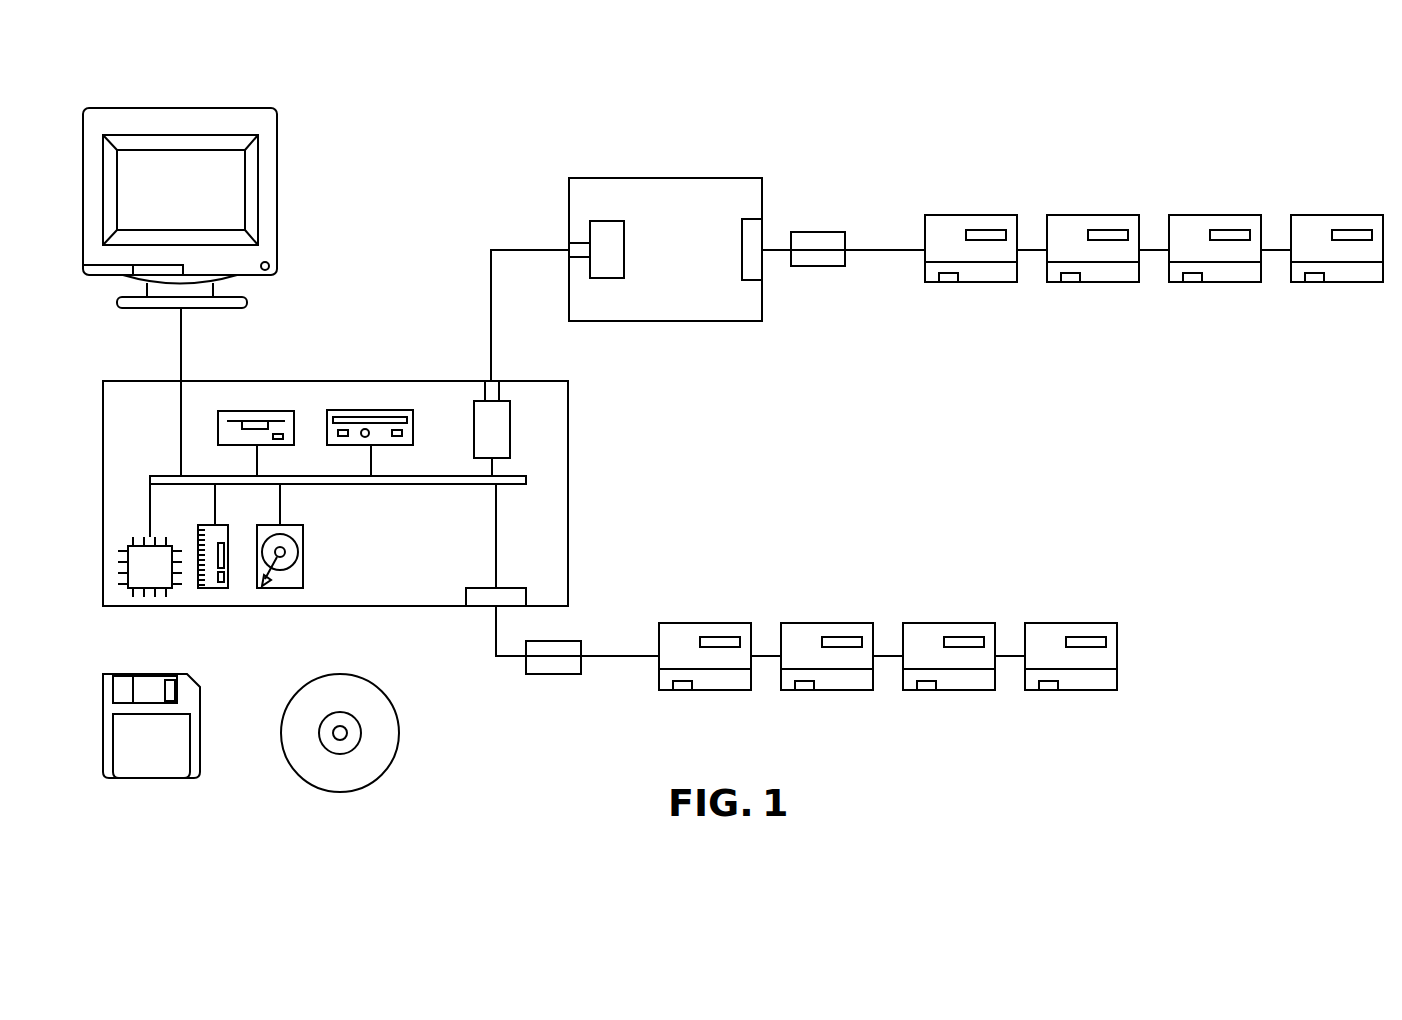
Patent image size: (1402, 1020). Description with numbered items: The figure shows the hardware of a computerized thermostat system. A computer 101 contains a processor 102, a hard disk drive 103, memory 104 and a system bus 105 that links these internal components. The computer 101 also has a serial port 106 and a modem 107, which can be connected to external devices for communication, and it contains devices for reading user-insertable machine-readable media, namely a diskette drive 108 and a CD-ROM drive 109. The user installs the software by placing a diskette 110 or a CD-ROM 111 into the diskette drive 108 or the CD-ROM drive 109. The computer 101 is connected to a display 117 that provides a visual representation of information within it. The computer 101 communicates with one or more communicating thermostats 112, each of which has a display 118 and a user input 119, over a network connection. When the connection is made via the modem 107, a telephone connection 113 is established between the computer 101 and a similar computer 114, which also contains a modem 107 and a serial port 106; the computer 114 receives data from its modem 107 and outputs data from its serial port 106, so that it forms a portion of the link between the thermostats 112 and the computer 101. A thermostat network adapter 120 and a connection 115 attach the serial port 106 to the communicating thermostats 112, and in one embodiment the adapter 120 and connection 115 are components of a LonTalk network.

The computer 101 is at (569, 494).
The processor 102 is at (153, 573).
The hard disk drive 103 is at (281, 590).
The memory 104 is at (215, 590).
The system bus 105 is at (338, 485).
The serial port 106 is at (483, 587).
The modem 107 is at (511, 425).
The diskette drive 108 is at (371, 410).
The CD-ROM drive 109 is at (257, 411).
The diskette 110 is at (200, 731).
The CD-ROM 111 is at (382, 690).
The communicating thermostat 112 is at (973, 215).
The telephone connection 113 is at (491, 313).
The similar computer 114 is at (665, 178).
The connection 115 is at (886, 250).
The display 117 is at (280, 192).
The display 118 is at (986, 232).
The user input 119 is at (949, 283).
The thermostat network adapter 120 is at (820, 232).